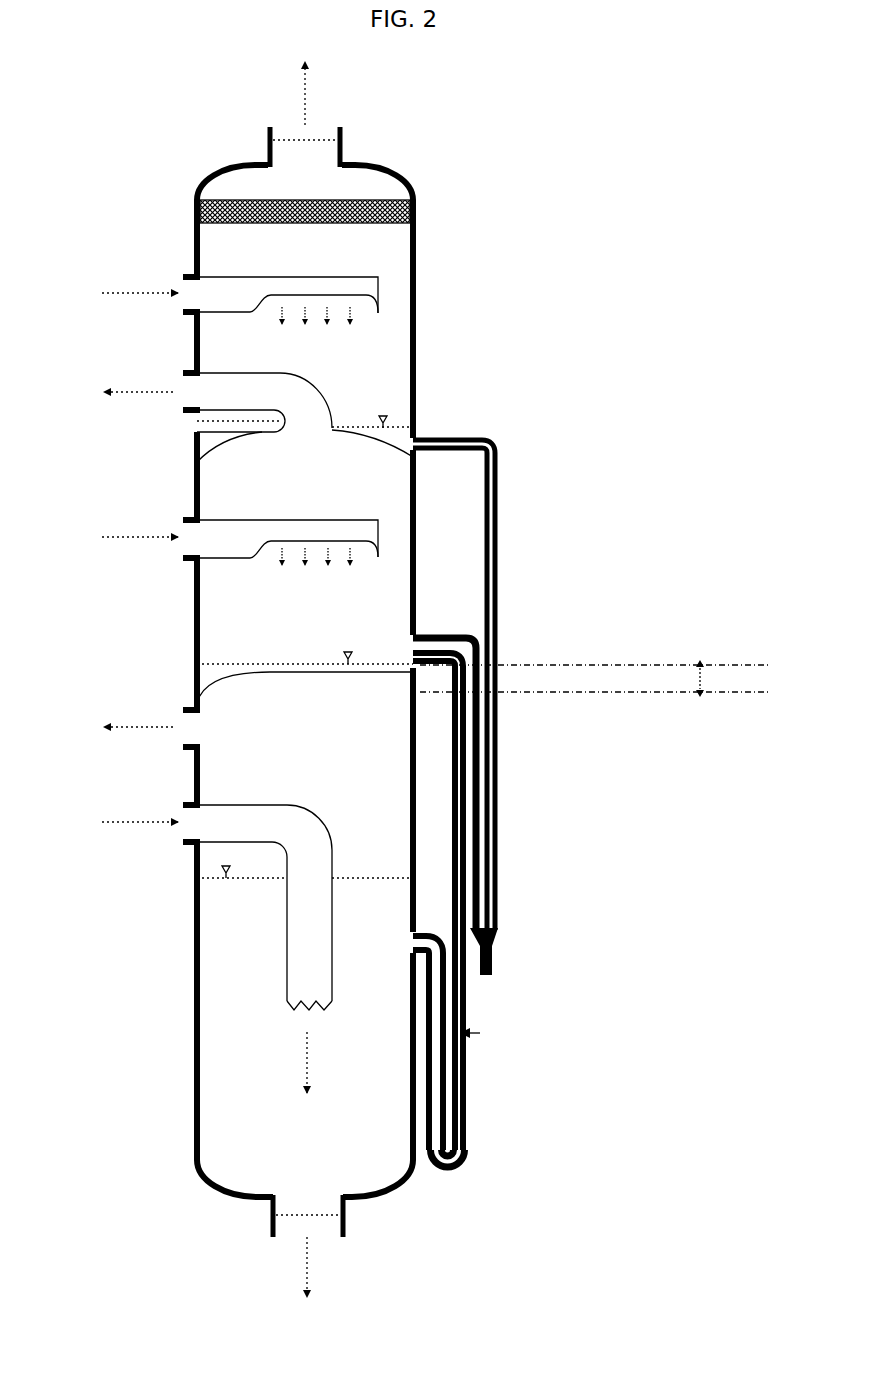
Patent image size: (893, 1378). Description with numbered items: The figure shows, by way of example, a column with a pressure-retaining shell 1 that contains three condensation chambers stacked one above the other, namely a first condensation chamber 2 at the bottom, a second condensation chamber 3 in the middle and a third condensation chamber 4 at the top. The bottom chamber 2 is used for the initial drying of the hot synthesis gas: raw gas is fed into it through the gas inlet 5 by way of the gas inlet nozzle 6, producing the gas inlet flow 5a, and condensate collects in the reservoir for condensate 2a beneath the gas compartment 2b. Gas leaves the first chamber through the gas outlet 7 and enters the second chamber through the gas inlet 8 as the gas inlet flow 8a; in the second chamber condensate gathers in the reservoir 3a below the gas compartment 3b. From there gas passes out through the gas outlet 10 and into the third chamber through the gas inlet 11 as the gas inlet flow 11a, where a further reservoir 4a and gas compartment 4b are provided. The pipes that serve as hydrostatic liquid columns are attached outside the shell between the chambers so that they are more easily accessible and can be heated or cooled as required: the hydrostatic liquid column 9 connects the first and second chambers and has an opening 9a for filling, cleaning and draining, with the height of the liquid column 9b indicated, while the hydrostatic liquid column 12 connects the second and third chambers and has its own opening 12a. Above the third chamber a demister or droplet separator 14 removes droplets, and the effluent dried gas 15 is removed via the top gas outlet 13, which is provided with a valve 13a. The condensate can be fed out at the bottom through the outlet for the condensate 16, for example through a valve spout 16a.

The column with pressure-retaining shell 1 is at (222, 171).
The first condensation chamber 2 is at (217, 986).
The reservoir for condensate in the first condensation chamber 2a is at (305, 898).
The gas compartment in the first condensation chamber 2b is at (304, 727).
The second condensation chamber 3 is at (199, 605).
The reservoir for condensate in the second condensation chamber 3a is at (194, 667).
The gas compartment in the second condensation chamber 3b is at (305, 447).
The third condensation chamber 4 is at (196, 332).
The reservoir for condensate in the third condensation chamber 4a is at (194, 426).
The gas compartment in the third condensation chamber 4b is at (377, 370).
The gas inlet in the first condensation chamber 5 is at (102, 815).
The gas inlet flow in the first condensation chamber 5a is at (330, 1062).
The gas inlet nozzle for the raw gas 6 is at (280, 976).
The gas outlet from the first condensation chamber 7 is at (102, 721).
The gas inlet in the second condensation chamber 8 is at (102, 528).
The gas inlet flow in the second condensation chamber 8a is at (316, 575).
The hydrostatic liquid column between the first and second condensation chambers 9 is at (466, 1118).
The opening for filling, cleaning and draining the hydrostatic liquid column 9a is at (480, 1033).
The height of the liquid column in the second condensation chamber 9b is at (595, 678).
The gas outlet from the second condensation chamber 10 is at (108, 383).
The gas inlet in the third condensation chamber 11 is at (116, 286).
The gas inlet flow in the third condensation chamber 11a is at (316, 332).
The hydrostatic liquid column between the second and third condensation chambers 12 is at (498, 866).
The opening for filling, cleaning and draining the hydrostatic liquid column 12a is at (493, 975).
The gas outlet for the dried gas 13 is at (293, 162).
The valve 13a is at (350, 141).
The demister or droplet separator 14 is at (248, 228).
The effluent dried gas 15 is at (312, 86).
The outlet for the condensate 16 is at (314, 1270).
The valve 16a is at (260, 1215).